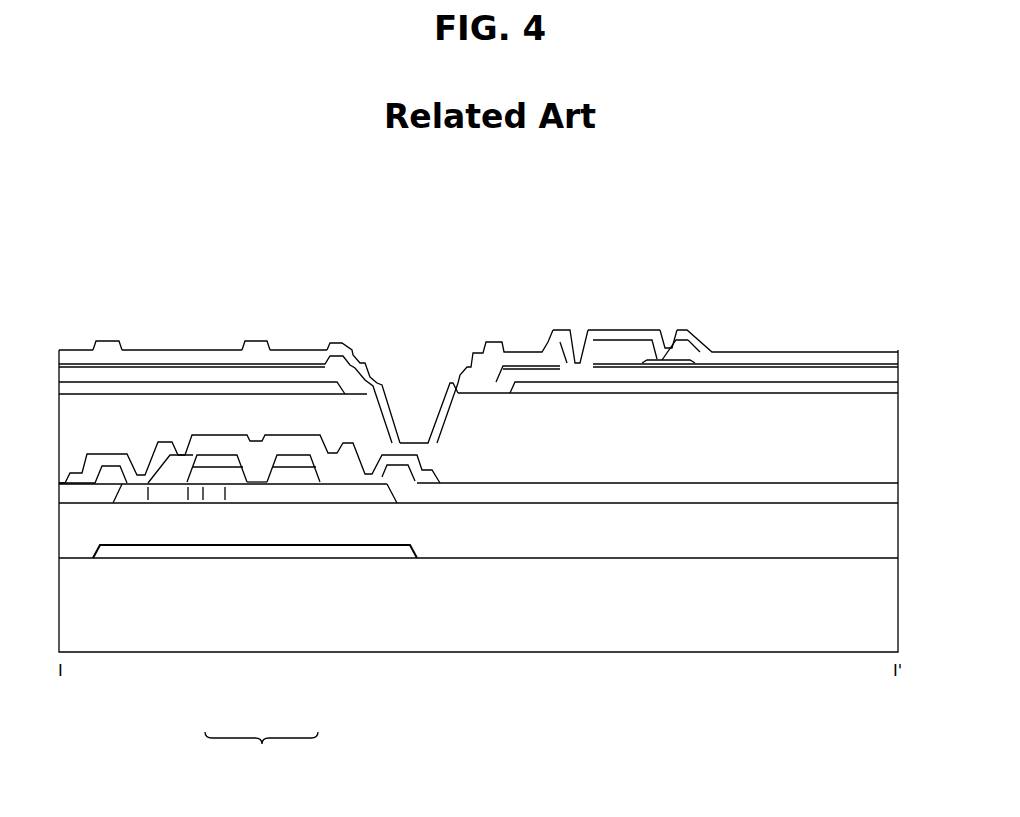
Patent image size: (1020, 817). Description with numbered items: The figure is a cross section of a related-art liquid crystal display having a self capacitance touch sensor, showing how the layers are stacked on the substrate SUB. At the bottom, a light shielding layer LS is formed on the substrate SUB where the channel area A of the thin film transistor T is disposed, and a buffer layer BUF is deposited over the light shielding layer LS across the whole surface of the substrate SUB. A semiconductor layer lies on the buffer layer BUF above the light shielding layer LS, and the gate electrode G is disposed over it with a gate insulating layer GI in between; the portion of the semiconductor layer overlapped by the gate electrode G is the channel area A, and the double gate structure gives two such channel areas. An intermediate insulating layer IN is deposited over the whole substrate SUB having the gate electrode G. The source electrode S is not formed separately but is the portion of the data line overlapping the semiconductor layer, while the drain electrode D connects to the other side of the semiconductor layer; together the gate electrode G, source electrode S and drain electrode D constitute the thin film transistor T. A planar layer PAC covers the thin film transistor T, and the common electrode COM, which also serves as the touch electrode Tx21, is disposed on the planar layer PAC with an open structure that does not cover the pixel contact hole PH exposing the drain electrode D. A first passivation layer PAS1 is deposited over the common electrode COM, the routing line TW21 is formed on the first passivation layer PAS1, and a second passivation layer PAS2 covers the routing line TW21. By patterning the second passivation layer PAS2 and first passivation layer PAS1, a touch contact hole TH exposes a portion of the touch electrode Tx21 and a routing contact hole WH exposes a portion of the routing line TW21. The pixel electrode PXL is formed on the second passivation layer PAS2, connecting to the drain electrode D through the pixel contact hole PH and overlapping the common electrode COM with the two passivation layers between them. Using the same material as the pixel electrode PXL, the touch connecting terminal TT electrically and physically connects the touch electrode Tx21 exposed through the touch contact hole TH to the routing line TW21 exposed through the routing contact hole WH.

The substrate SUB is at (513, 628).
The buffer layer BUF is at (590, 545).
The light shielding layer LS is at (383, 553).
The intermediate insulating layer IN is at (657, 497).
The gate insulating layer GI is at (317, 487).
The planar layer PAC is at (725, 468).
The first passivation layer PAS1 is at (870, 372).
The second passivation layer PAS2 is at (782, 358).
The common electrode COM is at (283, 380).
The pixel electrode PXL is at (253, 345).
The pixel contact hole PH is at (412, 378).
The gate electrode G is at (307, 463).
The source electrode S is at (147, 487).
The drain electrode D is at (375, 495).
The channel area A is at (203, 463).
The thin film transistor T is at (261, 749).
The touch contact hole TH is at (577, 333).
The touch connecting terminal TT is at (622, 333).
The routing contact hole WH is at (667, 330).
The 2row 1column touch electrode Tx21 is at (830, 388).
The 2row 1column routing line TW21 is at (680, 362).